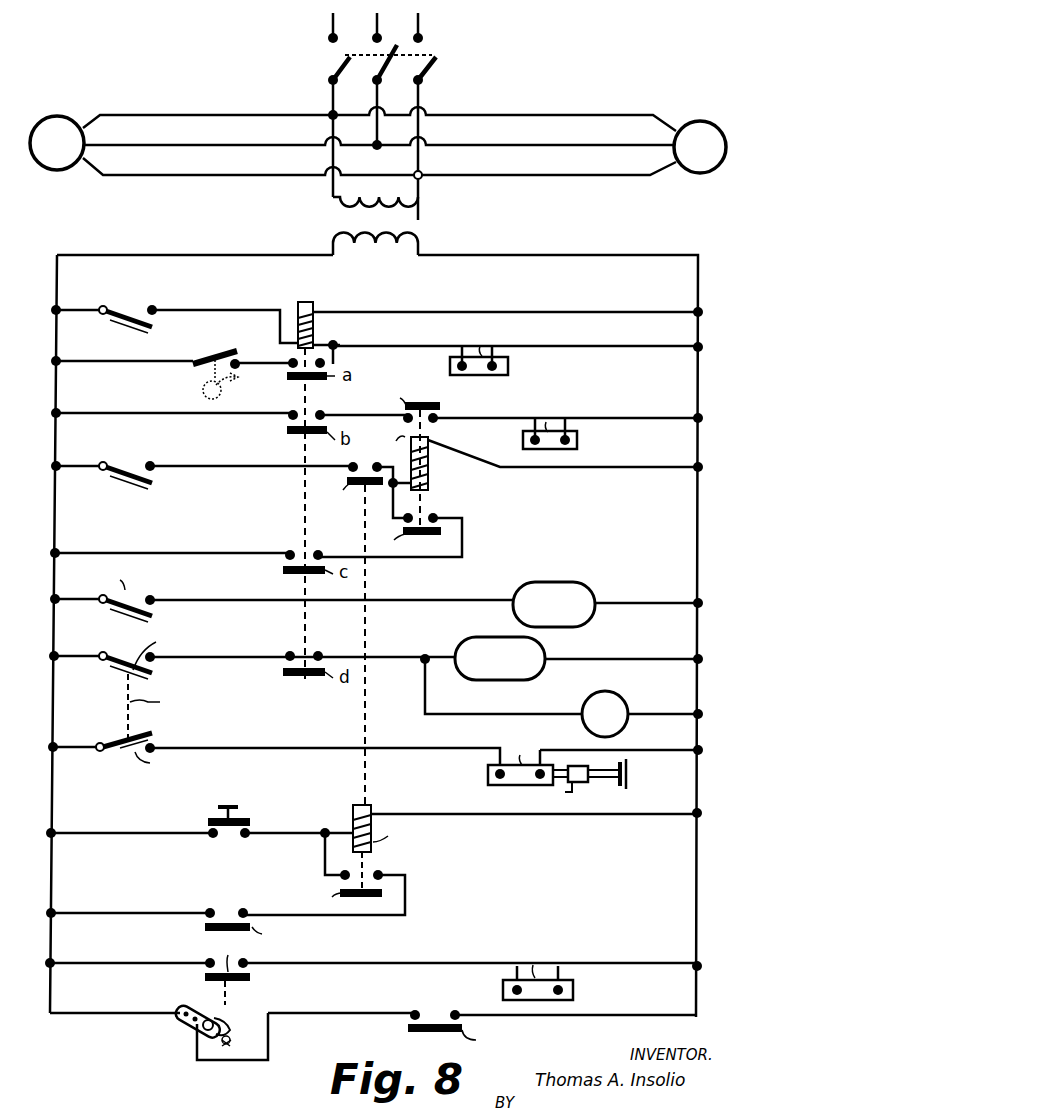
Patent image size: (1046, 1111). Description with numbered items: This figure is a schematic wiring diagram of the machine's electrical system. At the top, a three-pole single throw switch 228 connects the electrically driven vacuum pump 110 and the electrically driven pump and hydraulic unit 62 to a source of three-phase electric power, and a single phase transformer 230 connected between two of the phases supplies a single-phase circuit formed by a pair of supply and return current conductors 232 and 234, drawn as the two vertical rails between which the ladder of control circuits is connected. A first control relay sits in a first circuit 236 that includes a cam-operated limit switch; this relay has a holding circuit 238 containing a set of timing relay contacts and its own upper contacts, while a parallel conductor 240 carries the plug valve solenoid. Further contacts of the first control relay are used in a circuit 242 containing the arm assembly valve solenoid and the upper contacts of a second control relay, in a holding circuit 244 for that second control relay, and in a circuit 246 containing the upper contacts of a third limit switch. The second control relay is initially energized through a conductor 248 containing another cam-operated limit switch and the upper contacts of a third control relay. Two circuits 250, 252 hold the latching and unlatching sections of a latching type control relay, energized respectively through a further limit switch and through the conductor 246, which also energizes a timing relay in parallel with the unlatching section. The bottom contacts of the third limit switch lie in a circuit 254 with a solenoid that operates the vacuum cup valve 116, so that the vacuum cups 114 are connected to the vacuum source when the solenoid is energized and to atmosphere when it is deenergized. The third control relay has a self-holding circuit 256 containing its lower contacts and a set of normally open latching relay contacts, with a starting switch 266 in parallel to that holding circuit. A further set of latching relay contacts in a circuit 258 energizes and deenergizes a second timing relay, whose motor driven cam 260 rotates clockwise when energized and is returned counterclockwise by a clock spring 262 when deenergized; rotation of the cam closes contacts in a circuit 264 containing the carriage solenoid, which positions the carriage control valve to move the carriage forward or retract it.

The electrically driven vacuum pump 110 is at (60, 118).
The electrically driven pump and hydraulic unit 62 is at (716, 121).
The three-pole single throw switch 228 is at (437, 62).
The single phase transformer 230 is at (420, 219).
The supply current conductor 232 is at (57, 270).
The return current conductor 234 is at (700, 280).
The first circuit 236 is at (422, 311).
The holding circuit 238 is at (137, 364).
The conductor 240 is at (618, 348).
The circuit 242 is at (465, 416).
The holding circuit 244 is at (213, 553).
The circuit 246 is at (82, 660).
The conductor 248 is at (248, 466).
The circuit 250 is at (627, 603).
The circuit 252 is at (620, 659).
The circuit 254 is at (432, 750).
The self-holding circuit 256 is at (123, 913).
The circuit 258 is at (604, 1018).
The motor driven cam 260 is at (210, 1035).
The clock spring 262 is at (228, 1046).
The circuit 264 is at (420, 965).
The starting switch 266 is at (248, 822).
The vacuum cups 114 is at (628, 774).
The vacuum cup valve 116 is at (590, 783).